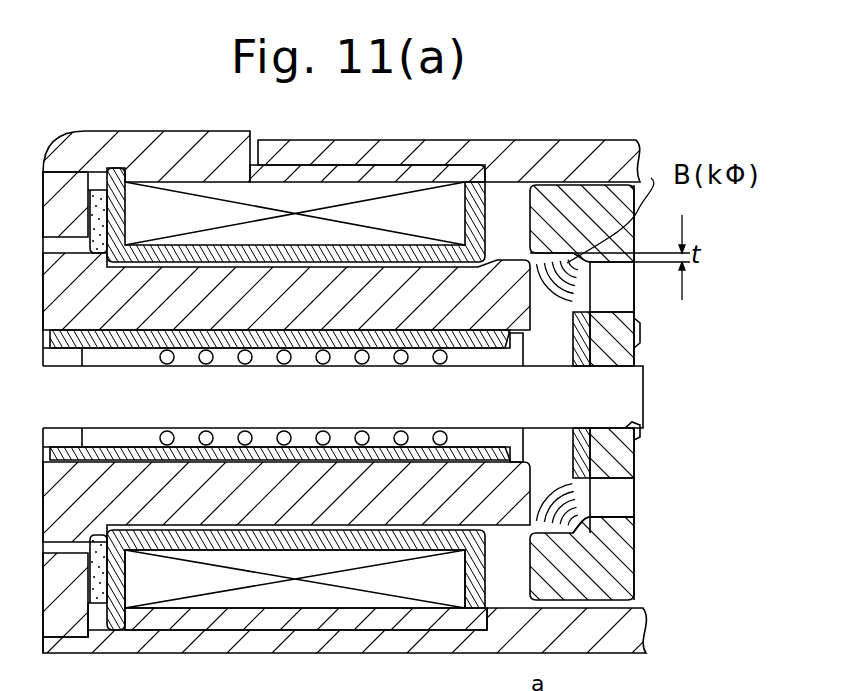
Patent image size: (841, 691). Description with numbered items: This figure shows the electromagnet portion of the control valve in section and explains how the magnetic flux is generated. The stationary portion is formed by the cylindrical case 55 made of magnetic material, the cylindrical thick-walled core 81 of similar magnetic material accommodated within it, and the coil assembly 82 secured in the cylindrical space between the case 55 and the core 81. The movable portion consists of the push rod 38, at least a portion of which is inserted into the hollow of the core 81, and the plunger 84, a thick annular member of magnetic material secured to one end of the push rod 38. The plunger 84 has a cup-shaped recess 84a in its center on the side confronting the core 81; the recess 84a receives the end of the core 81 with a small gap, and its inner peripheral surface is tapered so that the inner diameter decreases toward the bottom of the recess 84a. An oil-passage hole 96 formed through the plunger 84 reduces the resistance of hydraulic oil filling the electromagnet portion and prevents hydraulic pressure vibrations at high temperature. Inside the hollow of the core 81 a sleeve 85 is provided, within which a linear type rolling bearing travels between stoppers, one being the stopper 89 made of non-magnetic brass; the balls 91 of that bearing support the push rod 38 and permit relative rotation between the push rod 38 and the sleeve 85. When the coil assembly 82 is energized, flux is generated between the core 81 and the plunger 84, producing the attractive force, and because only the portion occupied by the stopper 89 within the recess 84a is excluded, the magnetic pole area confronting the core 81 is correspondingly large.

The push rod 38 is at (617, 395).
The core 81 is at (590, 457).
The plunger 84 is at (618, 568).
The cup-shaped recess 84a is at (577, 528).
The stopper 89 is at (593, 320).
The oil-passage hole 96 is at (618, 498).
The cylindrical case 55 is at (633, 630).
The balls 91 is at (207, 441).
The sleeve 85 is at (283, 447).
The coil assembly 82 is at (352, 577).